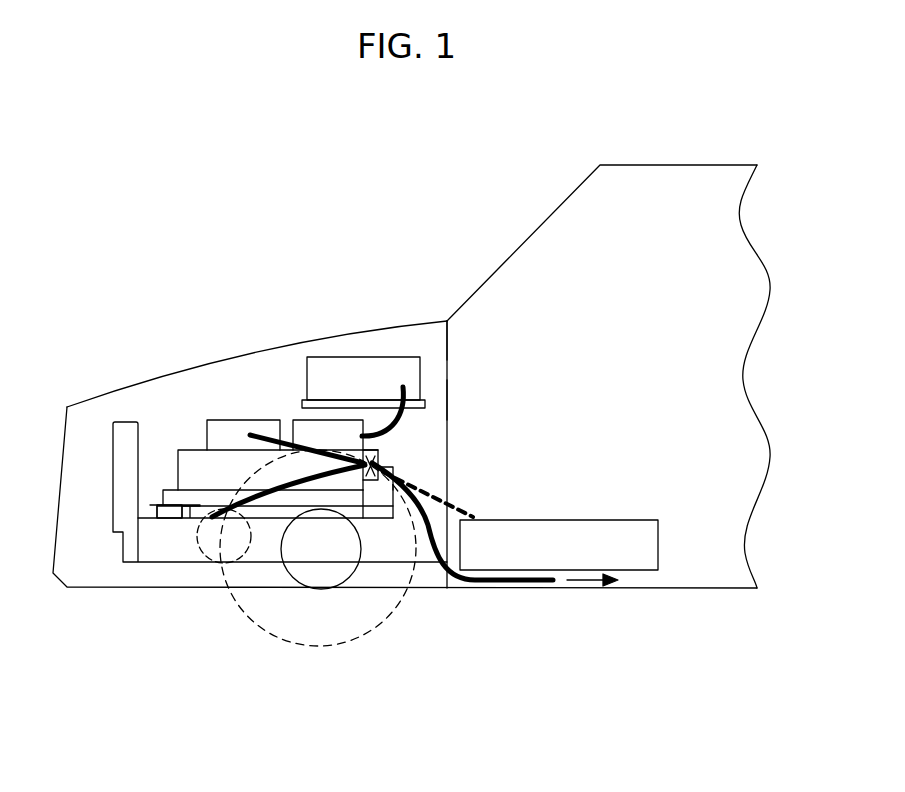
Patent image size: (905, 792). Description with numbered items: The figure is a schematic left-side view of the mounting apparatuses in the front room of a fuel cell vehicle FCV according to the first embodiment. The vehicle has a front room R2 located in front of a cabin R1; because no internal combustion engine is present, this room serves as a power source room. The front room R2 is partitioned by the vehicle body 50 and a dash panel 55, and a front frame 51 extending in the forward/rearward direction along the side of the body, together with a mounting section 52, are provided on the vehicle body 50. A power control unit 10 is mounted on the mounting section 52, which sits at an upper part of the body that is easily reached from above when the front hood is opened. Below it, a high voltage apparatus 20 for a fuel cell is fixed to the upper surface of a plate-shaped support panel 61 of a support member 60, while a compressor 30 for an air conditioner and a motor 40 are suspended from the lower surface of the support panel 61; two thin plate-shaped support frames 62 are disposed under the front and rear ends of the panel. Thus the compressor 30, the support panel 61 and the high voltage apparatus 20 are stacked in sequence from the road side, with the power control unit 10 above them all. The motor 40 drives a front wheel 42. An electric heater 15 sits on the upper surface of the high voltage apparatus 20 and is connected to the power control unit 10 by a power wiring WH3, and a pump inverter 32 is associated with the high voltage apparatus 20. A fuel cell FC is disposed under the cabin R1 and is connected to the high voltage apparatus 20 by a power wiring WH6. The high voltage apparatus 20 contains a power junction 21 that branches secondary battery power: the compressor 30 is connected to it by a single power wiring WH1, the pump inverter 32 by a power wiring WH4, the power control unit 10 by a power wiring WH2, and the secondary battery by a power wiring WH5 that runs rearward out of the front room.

The fuel cell vehicle FCV is at (369, 208).
The power control unit 10 is at (348, 365).
The electric heater 15 is at (308, 438).
The high voltage apparatus for a fuel cell 20 is at (193, 457).
The power junction 21 is at (379, 456).
The compressor for an air conditioner 30 is at (203, 557).
The pump inverter 32 is at (211, 422).
The motor 40 is at (285, 573).
The front wheel 42 is at (388, 652).
The vehicle body 50 is at (90, 398).
The front frame 51 is at (145, 550).
The mounting section 52 is at (448, 397).
The dash panel 55 is at (448, 340).
The support member 60 is at (196, 670).
The support panel 61 is at (195, 500).
The support frames 62 is at (165, 510).
The power wiring WH1 is at (233, 503).
The power wiring WH2 is at (400, 442).
The power wiring WH3 is at (376, 432).
The power wiring WH4 is at (267, 418).
The power wiring WH5 is at (495, 583).
The power wiring WH6 is at (473, 517).
The fuel cell FC is at (573, 533).
The cabin R1 is at (655, 353).
The front room R2 is at (193, 403).